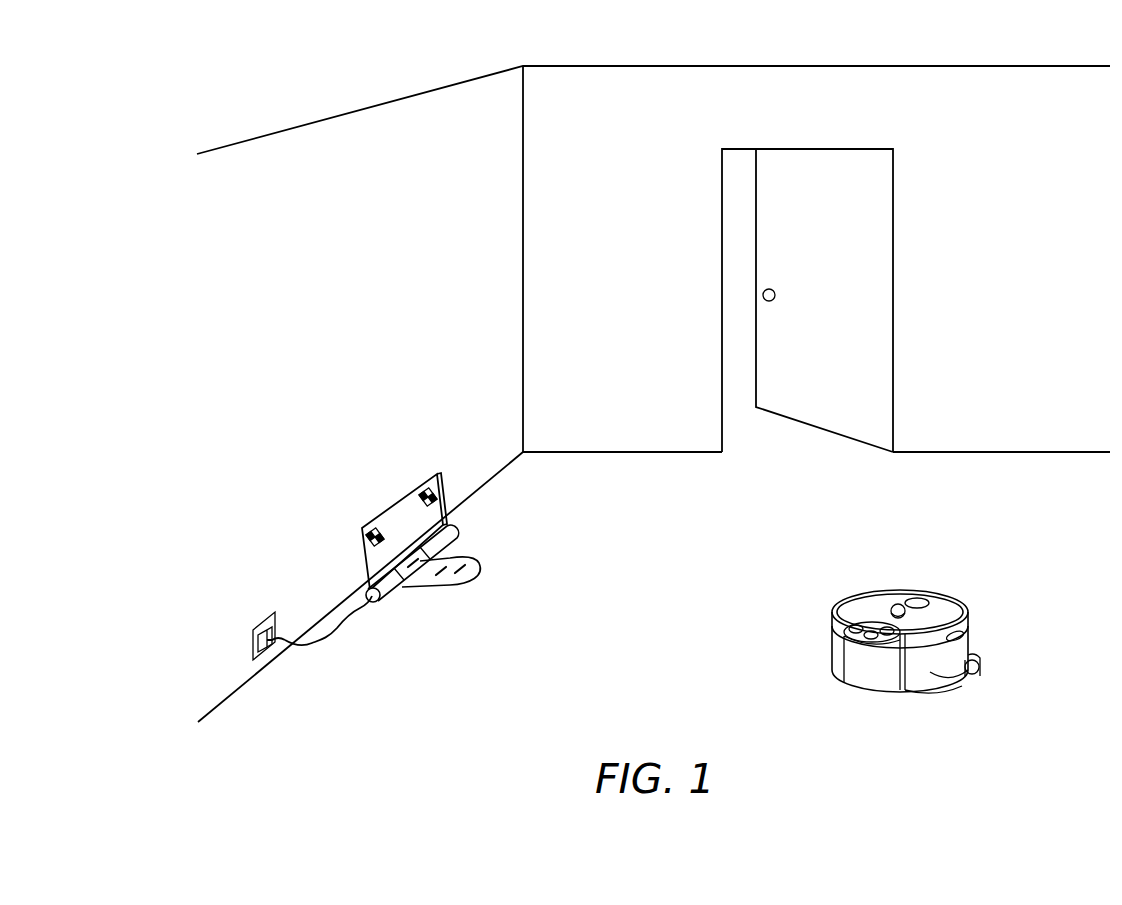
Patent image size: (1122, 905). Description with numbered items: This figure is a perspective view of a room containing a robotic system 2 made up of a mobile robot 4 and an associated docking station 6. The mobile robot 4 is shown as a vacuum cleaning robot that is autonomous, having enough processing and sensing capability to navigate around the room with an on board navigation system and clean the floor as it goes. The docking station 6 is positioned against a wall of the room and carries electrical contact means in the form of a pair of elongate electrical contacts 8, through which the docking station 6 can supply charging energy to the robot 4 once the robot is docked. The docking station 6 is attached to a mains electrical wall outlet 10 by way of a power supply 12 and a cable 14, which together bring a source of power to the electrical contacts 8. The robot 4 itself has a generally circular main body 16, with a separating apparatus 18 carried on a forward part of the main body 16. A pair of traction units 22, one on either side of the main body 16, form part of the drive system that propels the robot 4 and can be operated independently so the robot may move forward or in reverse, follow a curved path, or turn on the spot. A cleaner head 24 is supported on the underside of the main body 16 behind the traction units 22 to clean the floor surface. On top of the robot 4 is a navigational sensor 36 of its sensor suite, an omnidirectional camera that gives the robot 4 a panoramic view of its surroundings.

The robotic system 2 is at (1032, 503).
The mobile robot 4 is at (926, 649).
The docking station 6 is at (386, 485).
The elongate electrical contacts 8 is at (468, 557).
The mains electrical wall outlet 10 is at (263, 623).
The power supply 12 is at (274, 648).
The cable 14 is at (331, 638).
The main body 16 is at (946, 673).
The separating apparatus 18 is at (853, 678).
The traction units 22 is at (940, 692).
The cleaner head 24 is at (981, 668).
The navigational sensor 36 is at (898, 604).